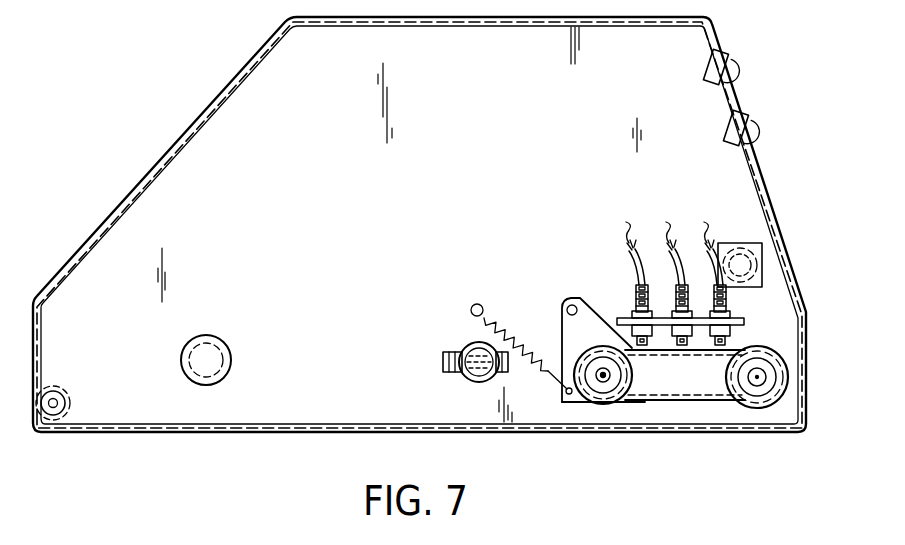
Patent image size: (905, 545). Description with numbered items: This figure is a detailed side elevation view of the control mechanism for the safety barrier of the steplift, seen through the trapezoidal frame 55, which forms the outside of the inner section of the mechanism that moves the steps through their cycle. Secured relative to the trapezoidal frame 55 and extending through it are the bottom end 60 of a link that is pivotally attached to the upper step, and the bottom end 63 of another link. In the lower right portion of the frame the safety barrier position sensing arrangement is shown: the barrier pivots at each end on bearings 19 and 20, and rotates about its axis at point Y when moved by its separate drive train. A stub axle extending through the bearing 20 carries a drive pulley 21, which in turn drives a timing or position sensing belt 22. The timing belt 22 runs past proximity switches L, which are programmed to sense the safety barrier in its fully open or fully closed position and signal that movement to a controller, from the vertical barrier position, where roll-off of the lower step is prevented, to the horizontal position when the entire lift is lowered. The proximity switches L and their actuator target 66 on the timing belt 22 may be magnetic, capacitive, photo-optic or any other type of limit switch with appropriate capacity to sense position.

The trapezoidal frame 55 is at (205, 99).
The bottom end of link 60 is at (70, 390).
The bottom end of link 63 is at (208, 345).
The actuator target 66 is at (630, 347).
The bearing 19 is at (603, 380).
The bearing 20 is at (757, 386).
The drive pulley 21 is at (760, 370).
The timing belt 22 is at (678, 401).
The axis point Y is at (760, 373).
The proximity switches L is at (670, 244).